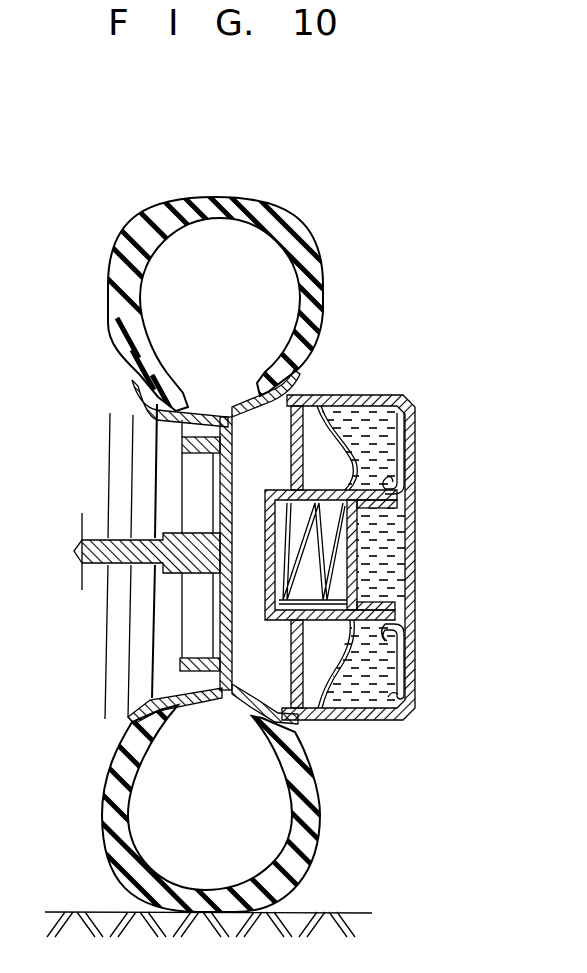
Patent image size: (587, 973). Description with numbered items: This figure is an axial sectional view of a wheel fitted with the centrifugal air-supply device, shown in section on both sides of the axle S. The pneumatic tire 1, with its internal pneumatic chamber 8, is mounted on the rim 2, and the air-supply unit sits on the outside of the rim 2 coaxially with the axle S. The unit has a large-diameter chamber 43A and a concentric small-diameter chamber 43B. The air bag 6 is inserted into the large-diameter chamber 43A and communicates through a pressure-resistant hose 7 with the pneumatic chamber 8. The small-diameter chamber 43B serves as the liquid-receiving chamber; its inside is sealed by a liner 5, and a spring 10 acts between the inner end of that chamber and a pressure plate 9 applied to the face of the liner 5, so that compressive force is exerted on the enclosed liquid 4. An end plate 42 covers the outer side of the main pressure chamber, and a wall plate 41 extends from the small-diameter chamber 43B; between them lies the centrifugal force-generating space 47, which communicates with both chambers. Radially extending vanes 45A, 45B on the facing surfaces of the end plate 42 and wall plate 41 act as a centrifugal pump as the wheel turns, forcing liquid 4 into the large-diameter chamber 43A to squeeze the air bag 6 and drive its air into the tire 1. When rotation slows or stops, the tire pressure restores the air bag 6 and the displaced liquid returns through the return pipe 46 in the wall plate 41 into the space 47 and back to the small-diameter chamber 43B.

The pneumatic tire 1 is at (310, 231).
The pneumatic chamber 8 is at (226, 317).
The pressure-resistant hose 7 is at (290, 725).
The rim 2 is at (240, 644).
The axle S is at (92, 568).
The liquid 4 is at (398, 542).
The end plate 42 is at (412, 572).
The large-diameter chamber 43A is at (361, 395).
The small-diameter chamber 43B is at (282, 490).
The liner 5 is at (383, 600).
The vane 45A is at (405, 445).
The return pipe 46 is at (384, 478).
The space 47 is at (400, 642).
The vane 45B is at (393, 674).
The wall plate 41 is at (407, 696).
The air bag 6 is at (342, 456).
The pressure plate 9 is at (342, 548).
The spring 10 is at (286, 582).